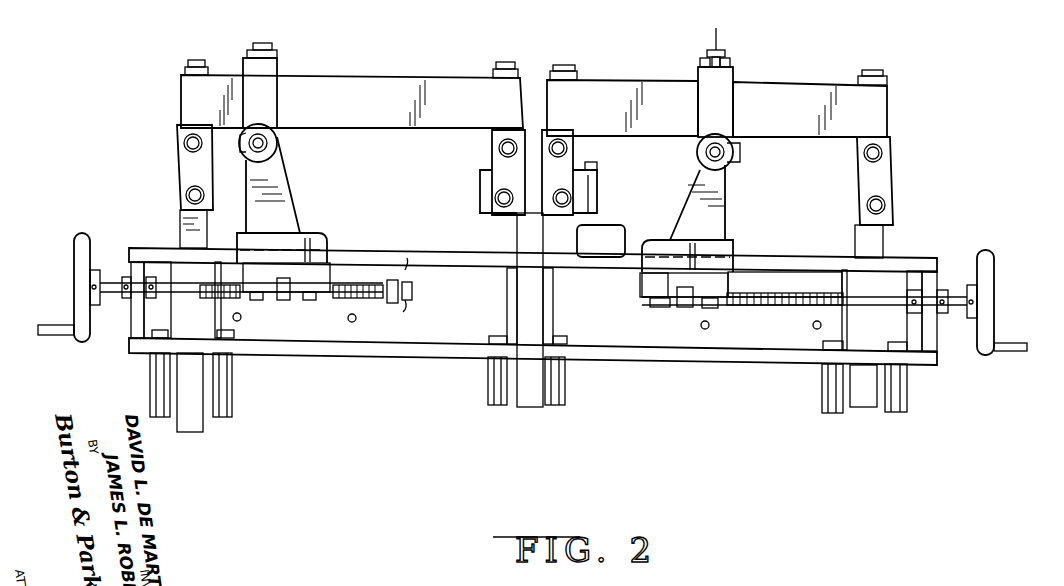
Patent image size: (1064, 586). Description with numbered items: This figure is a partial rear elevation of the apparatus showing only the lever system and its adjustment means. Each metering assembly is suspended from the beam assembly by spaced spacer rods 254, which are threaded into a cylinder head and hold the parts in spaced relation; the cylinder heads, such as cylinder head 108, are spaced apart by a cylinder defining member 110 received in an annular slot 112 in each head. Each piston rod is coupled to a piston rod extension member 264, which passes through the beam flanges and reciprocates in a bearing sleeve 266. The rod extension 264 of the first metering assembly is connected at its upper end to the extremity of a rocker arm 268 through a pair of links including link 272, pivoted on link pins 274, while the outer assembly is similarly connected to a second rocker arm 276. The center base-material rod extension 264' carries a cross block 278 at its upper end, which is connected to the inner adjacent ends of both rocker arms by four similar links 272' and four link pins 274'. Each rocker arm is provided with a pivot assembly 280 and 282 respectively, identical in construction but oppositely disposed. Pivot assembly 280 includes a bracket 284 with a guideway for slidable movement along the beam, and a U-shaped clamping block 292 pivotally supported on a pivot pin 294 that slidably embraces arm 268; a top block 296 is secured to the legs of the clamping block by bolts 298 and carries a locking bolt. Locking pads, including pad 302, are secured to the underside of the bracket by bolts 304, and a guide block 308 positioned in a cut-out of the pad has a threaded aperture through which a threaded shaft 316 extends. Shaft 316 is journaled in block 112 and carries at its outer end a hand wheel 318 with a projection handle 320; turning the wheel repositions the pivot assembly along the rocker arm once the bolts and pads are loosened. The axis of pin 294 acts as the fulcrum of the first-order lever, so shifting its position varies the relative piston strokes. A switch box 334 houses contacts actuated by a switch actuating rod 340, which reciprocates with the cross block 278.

The cylinder head 108 is at (688, 358).
The cylinder defining member 110 is at (788, 265).
The block 112 is at (137, 322).
The spacer rods 254 is at (152, 395).
The piston rod extension member 264 is at (556, 342).
The base material metering rod extension 264' is at (525, 325).
The bearing sleeve 266 is at (751, 309).
The rocker arm 268 is at (758, 96).
The link 272 is at (897, 181).
The link 272' is at (538, 172).
The link pins 274 is at (907, 175).
The link pins 274' is at (506, 175).
The second rocker arm 276 is at (367, 87).
The cross block 278 is at (483, 179).
The pivot assembly 280 is at (730, 201).
The pivot assembly 282 is at (300, 200).
The bracket 284 is at (290, 229).
The clamping block 292 is at (705, 98).
The pivot pin 294 is at (700, 155).
The top block 296 is at (702, 60).
The bolts 298 is at (722, 37).
The locking pad 302 is at (655, 283).
The bolts 304 is at (652, 304).
The guide block 308 is at (685, 310).
The threaded shaft 316 is at (405, 305).
The hand wheel 318 is at (78, 281).
The projection handle 320 is at (52, 337).
The switch box 334 is at (601, 241).
The switch actuating rod 340 is at (598, 199).